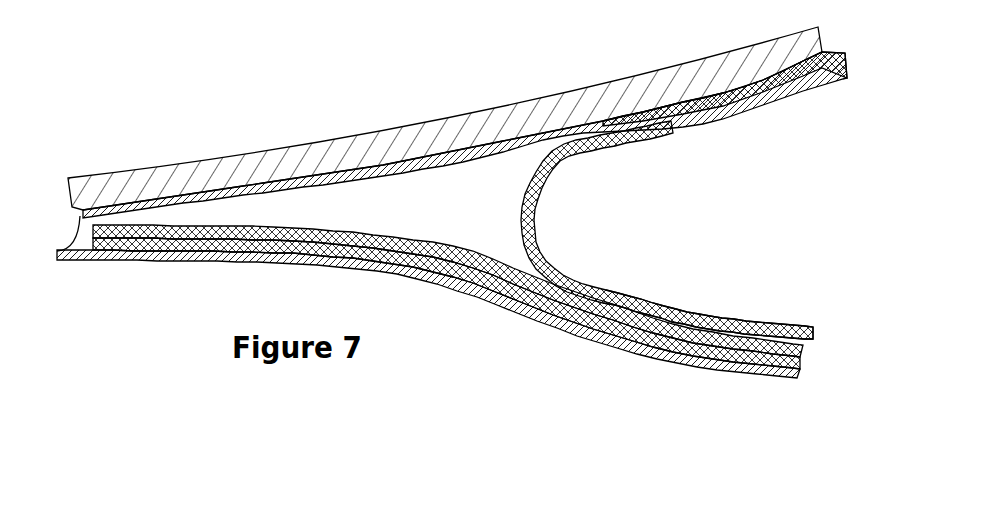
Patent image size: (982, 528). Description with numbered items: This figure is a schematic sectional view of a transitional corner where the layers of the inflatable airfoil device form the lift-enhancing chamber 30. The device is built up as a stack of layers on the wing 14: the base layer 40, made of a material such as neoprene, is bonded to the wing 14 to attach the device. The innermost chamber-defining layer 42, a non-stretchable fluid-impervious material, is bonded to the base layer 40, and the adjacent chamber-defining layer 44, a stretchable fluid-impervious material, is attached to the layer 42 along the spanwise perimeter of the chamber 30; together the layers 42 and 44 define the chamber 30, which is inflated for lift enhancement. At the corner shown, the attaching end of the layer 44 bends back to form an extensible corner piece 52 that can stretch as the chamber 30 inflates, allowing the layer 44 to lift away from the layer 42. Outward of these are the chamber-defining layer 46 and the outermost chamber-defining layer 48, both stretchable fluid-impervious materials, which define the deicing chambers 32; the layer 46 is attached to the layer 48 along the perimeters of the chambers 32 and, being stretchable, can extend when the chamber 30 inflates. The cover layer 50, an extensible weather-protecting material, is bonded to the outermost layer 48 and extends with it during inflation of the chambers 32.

The wing 14 is at (383, 146).
The lift-enhancing chamber 30 is at (430, 314).
The deicing chambers 32 is at (448, 317).
The base layer 40 is at (667, 110).
The innermost chamber-defining layer 42 is at (722, 112).
The adjacent chamber-defining layer 44 is at (722, 323).
The chamber-defining layer 46 is at (418, 275).
The outermost chamber-defining layer 48 is at (453, 277).
The cover layer 50 is at (587, 340).
The extensible corner pieces 52 is at (548, 193).